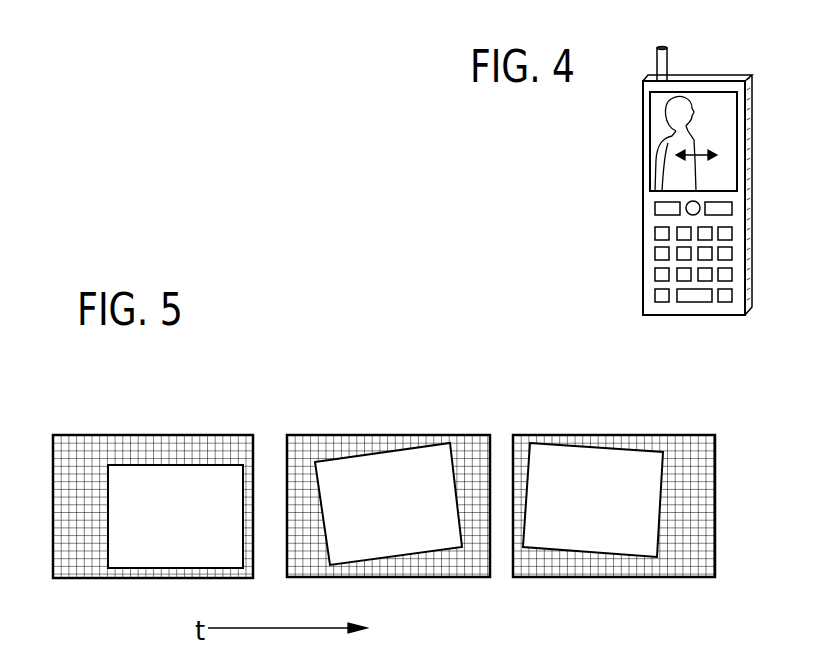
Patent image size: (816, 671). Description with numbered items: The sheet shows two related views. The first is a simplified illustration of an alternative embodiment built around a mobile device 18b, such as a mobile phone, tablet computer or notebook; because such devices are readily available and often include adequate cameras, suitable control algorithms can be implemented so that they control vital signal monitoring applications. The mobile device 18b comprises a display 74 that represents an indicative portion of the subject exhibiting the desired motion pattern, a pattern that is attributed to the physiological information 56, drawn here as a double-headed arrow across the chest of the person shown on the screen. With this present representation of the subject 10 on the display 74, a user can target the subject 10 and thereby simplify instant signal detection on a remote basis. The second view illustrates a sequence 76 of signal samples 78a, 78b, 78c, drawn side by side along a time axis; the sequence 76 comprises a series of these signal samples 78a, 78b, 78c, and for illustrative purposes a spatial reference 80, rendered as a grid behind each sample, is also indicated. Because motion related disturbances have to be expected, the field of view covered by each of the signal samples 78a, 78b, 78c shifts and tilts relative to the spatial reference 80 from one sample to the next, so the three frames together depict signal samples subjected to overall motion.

In FIG. 4, the subject 10 is at (672, 132).
In FIG. 4, the mobile device 18b is at (593, 240).
In FIG. 4, the physiological information 56 is at (692, 157).
In FIG. 4, the display 74 is at (716, 96).
In FIG. 5, the sequence 76 is at (123, 597).
In FIG. 5, the signal sample 78a is at (165, 512).
In FIG. 5, the signal sample 78b is at (378, 512).
In FIG. 5, the signal sample 78c is at (553, 512).
In FIG. 5, the spatial reference 80 is at (78, 440).